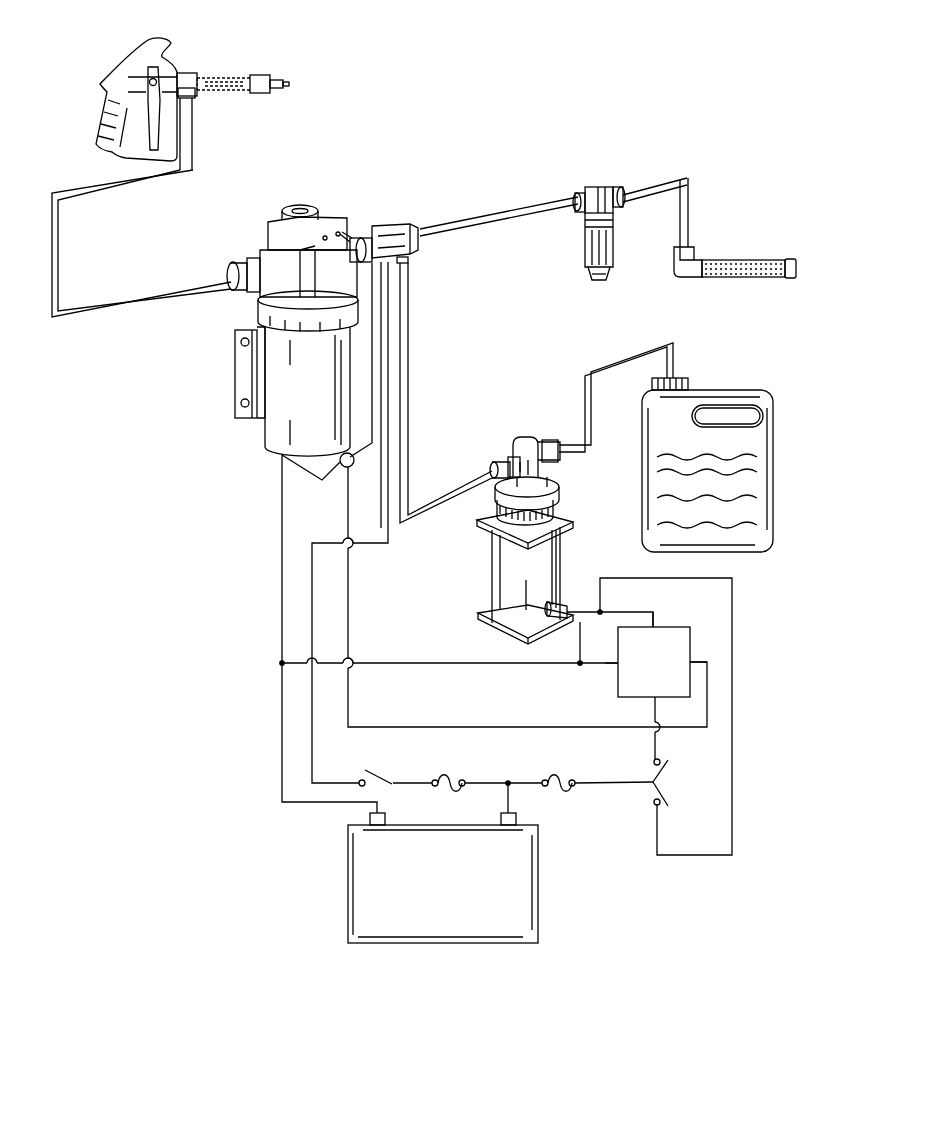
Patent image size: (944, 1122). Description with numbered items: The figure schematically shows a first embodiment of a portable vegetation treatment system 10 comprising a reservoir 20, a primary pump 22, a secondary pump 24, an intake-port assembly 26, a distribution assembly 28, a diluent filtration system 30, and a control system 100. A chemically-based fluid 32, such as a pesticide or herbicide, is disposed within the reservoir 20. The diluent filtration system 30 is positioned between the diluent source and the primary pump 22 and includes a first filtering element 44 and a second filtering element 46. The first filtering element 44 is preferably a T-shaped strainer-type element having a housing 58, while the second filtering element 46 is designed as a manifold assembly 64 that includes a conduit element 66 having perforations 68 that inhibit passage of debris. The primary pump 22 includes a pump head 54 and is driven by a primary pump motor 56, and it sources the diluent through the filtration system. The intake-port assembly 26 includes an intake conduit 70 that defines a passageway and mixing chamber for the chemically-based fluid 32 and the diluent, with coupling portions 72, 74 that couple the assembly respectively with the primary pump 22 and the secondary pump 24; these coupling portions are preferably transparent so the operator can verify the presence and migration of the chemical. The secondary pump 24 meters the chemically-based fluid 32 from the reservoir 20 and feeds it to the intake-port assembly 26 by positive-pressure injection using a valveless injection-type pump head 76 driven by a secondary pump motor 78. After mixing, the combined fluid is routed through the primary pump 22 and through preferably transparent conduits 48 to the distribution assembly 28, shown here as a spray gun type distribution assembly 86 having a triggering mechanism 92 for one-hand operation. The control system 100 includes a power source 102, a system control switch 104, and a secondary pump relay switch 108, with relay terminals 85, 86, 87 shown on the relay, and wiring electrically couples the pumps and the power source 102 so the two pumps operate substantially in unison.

The portable vegetation treatment system 10 is at (185, 852).
The reservoir 20 is at (757, 535).
The primary pump 22 is at (260, 443).
The secondary pump 24 is at (525, 435).
The intake-port assembly 26 is at (400, 222).
The distribution assembly 28 is at (105, 63).
The diluent filtration system 30 is at (768, 158).
The chemically-based fluid 32 is at (752, 457).
The first filtering element 44 is at (583, 250).
The second filtering element 46 is at (770, 284).
The conduits 48 is at (55, 322).
The pump head 54 is at (260, 237).
The primary pump motor 56 is at (287, 387).
The housing 58 is at (578, 198).
The manifold assembly 64 is at (697, 285).
The conduit element 66 is at (785, 258).
The perforations 68 is at (743, 282).
The intake conduit 70 is at (373, 243).
The coupling portion 72 is at (357, 237).
The coupling portion 74 is at (407, 262).
The valveless injection-type pump head 76 is at (555, 467).
The secondary pump motor 78 is at (485, 580).
The relay terminal 85 is at (686, 663).
The distribution assembly 86 is at (627, 663).
The relay terminal 87 is at (658, 631).
The triggering mechanism 92 is at (163, 127).
The control system 100 is at (272, 530).
The power source 102 is at (515, 908).
The system control switch 104 is at (373, 786).
The secondary pump relay switch 108 is at (648, 795).